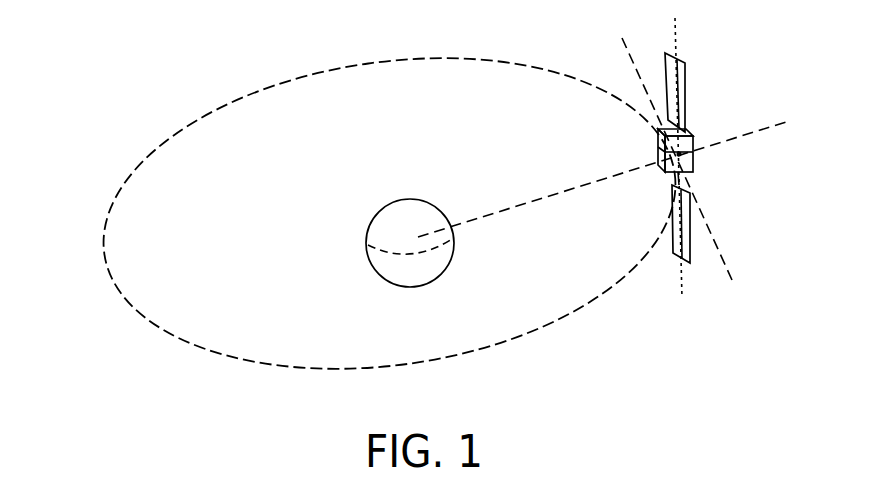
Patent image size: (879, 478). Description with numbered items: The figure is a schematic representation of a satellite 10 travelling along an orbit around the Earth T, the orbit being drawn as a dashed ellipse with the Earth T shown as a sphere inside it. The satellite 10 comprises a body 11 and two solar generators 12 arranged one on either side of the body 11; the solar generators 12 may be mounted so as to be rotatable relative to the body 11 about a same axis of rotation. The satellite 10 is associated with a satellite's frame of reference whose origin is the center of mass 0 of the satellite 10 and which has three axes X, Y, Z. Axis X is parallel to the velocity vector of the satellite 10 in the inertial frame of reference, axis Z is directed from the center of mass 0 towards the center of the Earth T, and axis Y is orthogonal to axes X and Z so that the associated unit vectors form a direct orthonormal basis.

The satellite 10 is at (719, 174).
The body 11 is at (695, 132).
The solar generators 12 is at (685, 73).
The center of mass 0 is at (697, 153).
The Earth T is at (397, 217).
The axis X is at (677, 145).
The axis Y is at (671, 167).
The axis Z is at (602, 179).